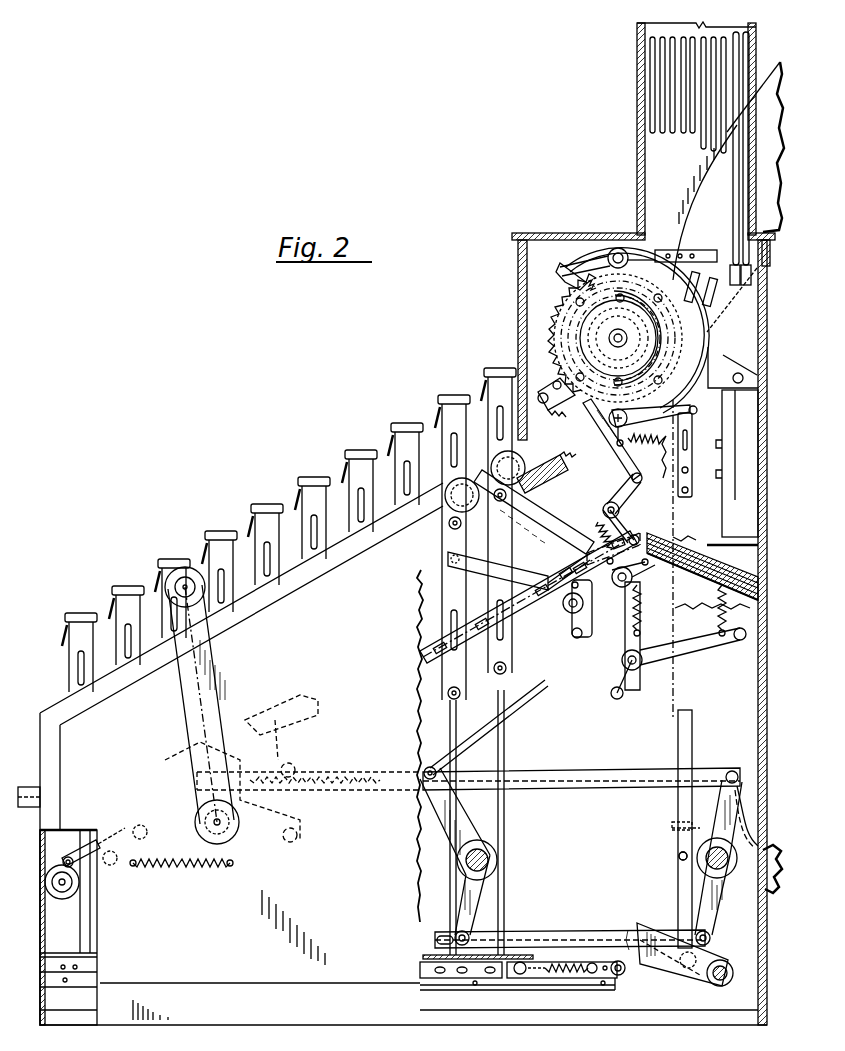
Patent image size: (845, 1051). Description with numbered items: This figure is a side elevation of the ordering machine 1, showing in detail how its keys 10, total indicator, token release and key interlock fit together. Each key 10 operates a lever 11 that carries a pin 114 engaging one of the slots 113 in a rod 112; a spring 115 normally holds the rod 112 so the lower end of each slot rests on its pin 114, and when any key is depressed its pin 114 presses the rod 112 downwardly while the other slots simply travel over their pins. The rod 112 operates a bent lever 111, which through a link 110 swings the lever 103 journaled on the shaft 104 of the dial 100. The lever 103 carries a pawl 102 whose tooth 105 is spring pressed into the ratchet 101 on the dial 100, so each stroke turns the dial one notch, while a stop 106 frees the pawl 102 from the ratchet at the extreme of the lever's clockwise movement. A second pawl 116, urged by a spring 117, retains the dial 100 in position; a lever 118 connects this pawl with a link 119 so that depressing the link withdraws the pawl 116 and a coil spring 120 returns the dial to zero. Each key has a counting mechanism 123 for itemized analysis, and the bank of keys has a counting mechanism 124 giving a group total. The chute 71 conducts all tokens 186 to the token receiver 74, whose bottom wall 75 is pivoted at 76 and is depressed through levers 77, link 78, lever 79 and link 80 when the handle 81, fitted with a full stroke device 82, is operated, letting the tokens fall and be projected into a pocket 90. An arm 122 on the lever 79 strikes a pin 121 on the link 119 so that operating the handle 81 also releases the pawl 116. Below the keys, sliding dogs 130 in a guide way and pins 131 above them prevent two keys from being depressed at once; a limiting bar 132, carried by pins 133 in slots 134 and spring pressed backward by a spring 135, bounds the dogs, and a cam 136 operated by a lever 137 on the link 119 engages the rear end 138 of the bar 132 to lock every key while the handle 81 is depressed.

The ordering machine 1 is at (353, 367).
The chute 71 is at (702, 183).
The dial 100 is at (526, 300).
The ratchet 101 is at (574, 281).
The coil spring 120 is at (615, 270).
The shaft 104 is at (612, 336).
The lever 103 is at (603, 366).
The tooth 105 is at (605, 388).
The pawl 102 is at (565, 409).
The link 110 is at (612, 451).
The bent lever 111 is at (622, 496).
The spring 115 is at (598, 522).
The pawl 116 is at (655, 418).
The spring 117 is at (647, 456).
The lever 118 is at (689, 418).
The link 119 is at (686, 466).
The pivot 76 is at (648, 537).
The token receiver 74 is at (708, 568).
The bottom wall 75 is at (730, 583).
The tokens 186 is at (654, 639).
The stop 106 is at (522, 360).
The keys 10 is at (81, 612).
The counting mechanism 123 is at (478, 462).
The lever 11 is at (542, 536).
The pin 114 is at (566, 566).
The rod 112 is at (536, 600).
The slots 113 is at (480, 636).
The handle 81 is at (208, 658).
The full stroke device 82 is at (258, 690).
The link 80 is at (560, 778).
The levers 77 is at (466, 817).
The pins 131 is at (453, 875).
The arm 122 is at (672, 828).
The pin 121 is at (678, 857).
The lever 79 is at (722, 906).
The pocket 90 is at (774, 881).
The link 78 is at (548, 930).
The pins 133 is at (522, 968).
The slots 134 is at (606, 966).
The sliding dogs 130 is at (440, 980).
The limiting bar 132 is at (525, 978).
The spring 135 is at (572, 984).
The rear end 138 is at (620, 978).
The cam 136 is at (660, 972).
The lever 137 is at (716, 986).
The counting mechanism 124 is at (62, 900).